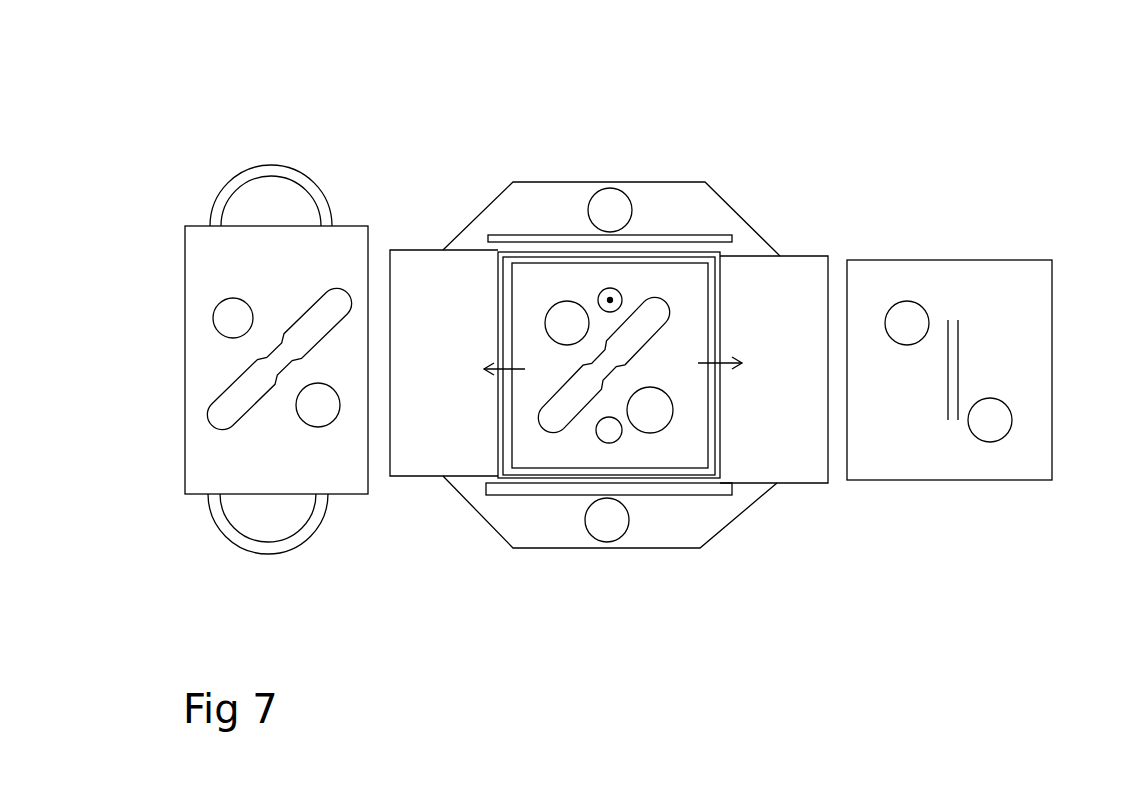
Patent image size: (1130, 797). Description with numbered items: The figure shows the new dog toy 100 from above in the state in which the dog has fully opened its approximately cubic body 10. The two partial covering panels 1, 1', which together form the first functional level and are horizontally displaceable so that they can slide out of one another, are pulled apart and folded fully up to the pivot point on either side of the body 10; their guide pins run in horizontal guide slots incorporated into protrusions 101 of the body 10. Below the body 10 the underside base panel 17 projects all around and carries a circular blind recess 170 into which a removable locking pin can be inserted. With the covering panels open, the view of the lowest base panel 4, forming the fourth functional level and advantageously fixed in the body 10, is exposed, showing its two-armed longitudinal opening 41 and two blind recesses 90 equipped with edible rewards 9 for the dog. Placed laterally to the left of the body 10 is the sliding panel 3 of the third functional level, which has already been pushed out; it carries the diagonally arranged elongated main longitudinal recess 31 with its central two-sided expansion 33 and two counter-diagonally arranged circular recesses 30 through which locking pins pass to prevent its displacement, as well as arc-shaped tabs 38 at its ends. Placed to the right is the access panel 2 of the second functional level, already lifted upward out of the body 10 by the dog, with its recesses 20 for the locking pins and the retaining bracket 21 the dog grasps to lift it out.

The dog toy 100 is at (462, 100).
The partial covering panel 1 is at (772, 331).
The partial covering panel 1' is at (457, 319).
The access panel 2 is at (953, 275).
The sliding panel 3 is at (335, 245).
The base panel 4 is at (552, 450).
The edible reward 9 is at (613, 296).
The body 10 is at (712, 430).
The base panel 17 is at (669, 204).
The recess 20 is at (903, 305).
The retaining bracket 21 is at (953, 355).
The circular recess 30 is at (215, 312).
The main longitudinal recess 31 is at (223, 400).
The expansion 33 is at (290, 377).
The arc-shaped tab 38 is at (258, 178).
The two-armed longitudinal opening 41 is at (568, 420).
The blind recess 90 is at (606, 290).
The protrusion 101 is at (693, 248).
The circular blind recess 170 is at (602, 532).